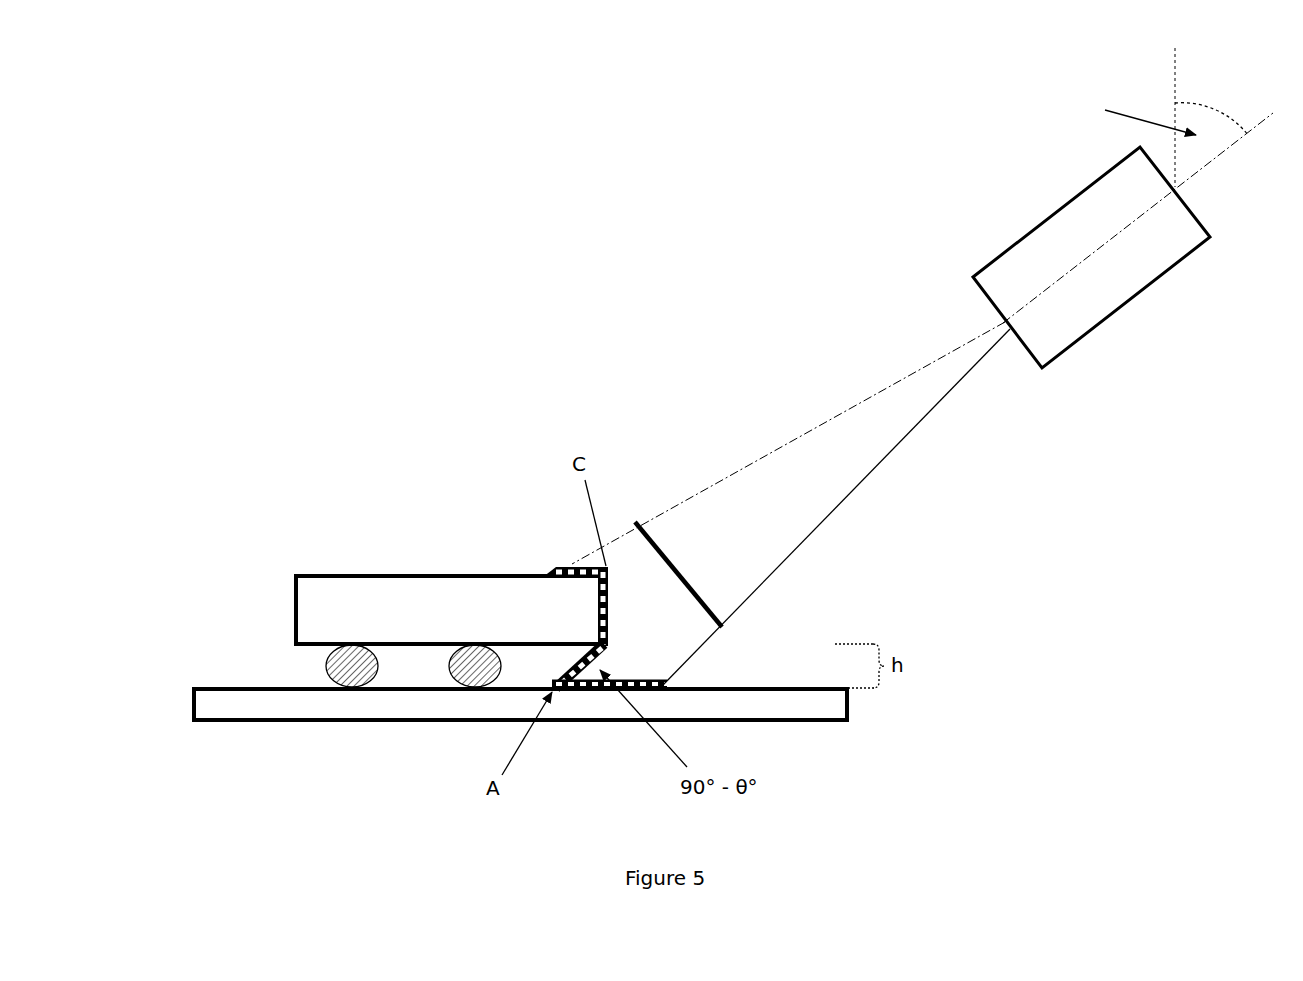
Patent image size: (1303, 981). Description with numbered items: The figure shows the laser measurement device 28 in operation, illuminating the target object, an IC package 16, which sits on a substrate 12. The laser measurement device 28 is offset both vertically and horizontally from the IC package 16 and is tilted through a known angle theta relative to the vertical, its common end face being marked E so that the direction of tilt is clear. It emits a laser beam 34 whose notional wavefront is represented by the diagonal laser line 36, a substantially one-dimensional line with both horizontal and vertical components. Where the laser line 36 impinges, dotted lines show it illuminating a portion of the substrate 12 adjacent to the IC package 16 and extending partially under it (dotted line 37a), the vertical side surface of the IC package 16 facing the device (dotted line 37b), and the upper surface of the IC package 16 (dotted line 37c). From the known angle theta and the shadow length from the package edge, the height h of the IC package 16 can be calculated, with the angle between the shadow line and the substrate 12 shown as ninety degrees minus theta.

The substrate 12 is at (233, 707).
The IC package 16 is at (333, 595).
The laser measurement device 28 is at (1137, 325).
The laser beam 34 is at (845, 497).
The laser line 36 is at (662, 553).
The dotted line 37a is at (578, 690).
The dotted line 37b is at (611, 617).
The dotted line 37c is at (575, 563).